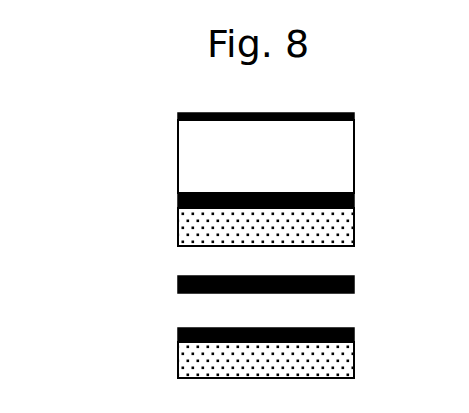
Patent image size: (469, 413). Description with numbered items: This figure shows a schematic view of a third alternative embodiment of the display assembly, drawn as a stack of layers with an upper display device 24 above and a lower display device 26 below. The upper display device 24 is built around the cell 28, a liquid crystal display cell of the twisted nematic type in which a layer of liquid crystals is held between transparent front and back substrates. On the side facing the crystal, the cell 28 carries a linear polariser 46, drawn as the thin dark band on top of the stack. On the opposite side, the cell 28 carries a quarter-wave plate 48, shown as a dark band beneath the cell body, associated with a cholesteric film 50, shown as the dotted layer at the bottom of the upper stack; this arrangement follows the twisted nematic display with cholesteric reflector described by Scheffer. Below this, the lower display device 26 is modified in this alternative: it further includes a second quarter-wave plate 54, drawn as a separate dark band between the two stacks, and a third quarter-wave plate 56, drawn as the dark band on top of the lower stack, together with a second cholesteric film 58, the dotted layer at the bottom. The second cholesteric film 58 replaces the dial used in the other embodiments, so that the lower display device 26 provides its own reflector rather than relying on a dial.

The upper display device 24 is at (128, 168).
The lower display device 26 is at (128, 345).
The cell 28 is at (336, 160).
The linear polariser 46 is at (354, 116).
The quarter-wave plate 48 is at (354, 199).
The cholesteric film 50 is at (336, 233).
The second quarter-wave plate 54 is at (354, 285).
The third quarter-wave plate 56 is at (354, 334).
The second cholesteric film 58 is at (336, 367).